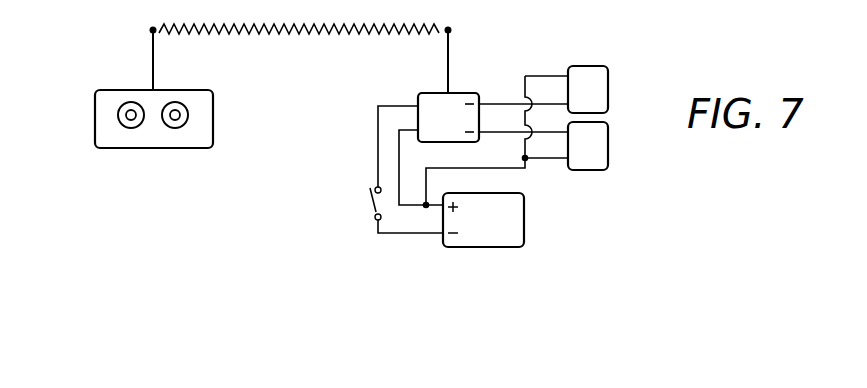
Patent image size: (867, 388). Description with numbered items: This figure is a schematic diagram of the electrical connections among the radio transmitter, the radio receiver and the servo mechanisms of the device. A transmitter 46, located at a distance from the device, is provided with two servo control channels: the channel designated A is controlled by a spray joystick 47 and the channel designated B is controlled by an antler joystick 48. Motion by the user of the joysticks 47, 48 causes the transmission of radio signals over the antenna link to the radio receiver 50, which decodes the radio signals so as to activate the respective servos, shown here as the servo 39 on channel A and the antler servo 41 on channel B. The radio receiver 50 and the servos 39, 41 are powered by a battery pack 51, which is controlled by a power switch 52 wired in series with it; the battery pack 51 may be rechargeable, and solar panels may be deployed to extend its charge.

The spray servo 39 is at (608, 84).
The antler servo 41 is at (608, 148).
The transmitter 46 is at (153, 148).
The spray joystick 47 is at (119, 122).
The antler joystick 48 is at (188, 111).
The radio receiver 50 is at (427, 93).
The battery pack 51 is at (524, 212).
The power switch 52 is at (368, 204).